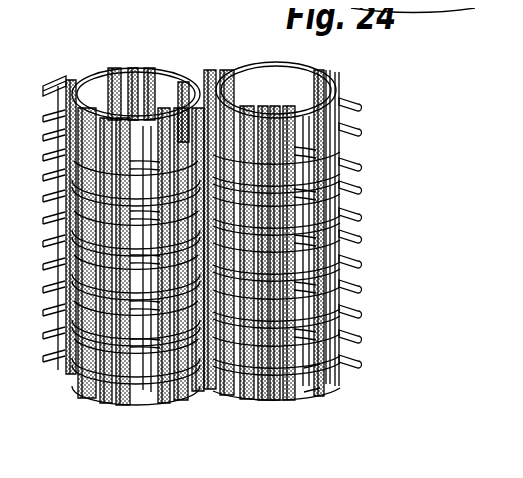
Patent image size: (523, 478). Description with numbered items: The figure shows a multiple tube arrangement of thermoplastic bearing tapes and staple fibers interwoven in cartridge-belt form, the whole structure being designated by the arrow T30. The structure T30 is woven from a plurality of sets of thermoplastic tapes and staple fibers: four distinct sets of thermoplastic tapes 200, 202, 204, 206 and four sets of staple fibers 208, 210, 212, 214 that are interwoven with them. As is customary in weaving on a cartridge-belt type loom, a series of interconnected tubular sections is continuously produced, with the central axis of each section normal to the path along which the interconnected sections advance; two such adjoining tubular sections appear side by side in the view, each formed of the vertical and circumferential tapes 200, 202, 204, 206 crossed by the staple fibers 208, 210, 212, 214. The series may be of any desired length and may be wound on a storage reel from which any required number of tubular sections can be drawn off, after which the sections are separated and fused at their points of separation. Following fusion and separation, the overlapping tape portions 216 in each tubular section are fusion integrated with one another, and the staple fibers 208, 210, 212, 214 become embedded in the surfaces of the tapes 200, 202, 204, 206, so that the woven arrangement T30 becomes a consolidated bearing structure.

The thermoplastic tape 200 is at (350, 122).
The thermoplastic tape 202 is at (353, 100).
The thermoplastic tape 204 is at (62, 366).
The thermoplastic tape 206 is at (99, 64).
The staple fibers 208 is at (343, 230).
The staple fibers 210 is at (345, 248).
The staple fibers 212 is at (168, 30).
The staple fibers 214 is at (140, 403).
The overlapping tape portions 216 is at (63, 78).
The woven tube structure T30 is at (184, 65).